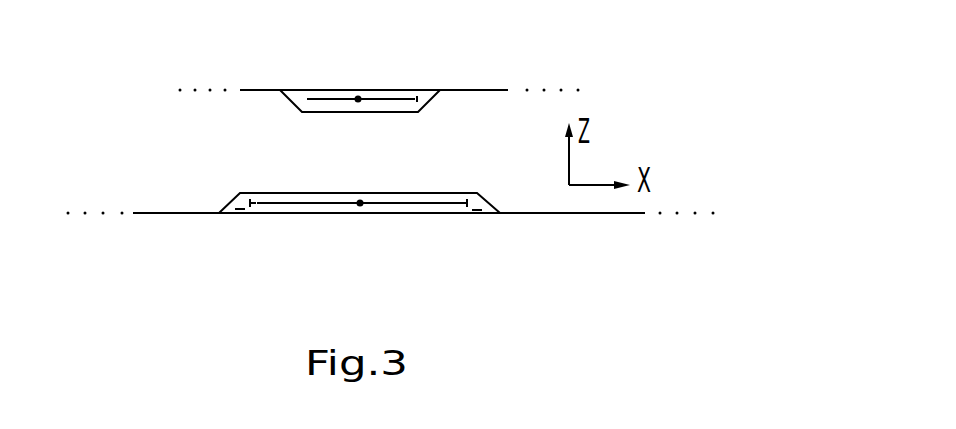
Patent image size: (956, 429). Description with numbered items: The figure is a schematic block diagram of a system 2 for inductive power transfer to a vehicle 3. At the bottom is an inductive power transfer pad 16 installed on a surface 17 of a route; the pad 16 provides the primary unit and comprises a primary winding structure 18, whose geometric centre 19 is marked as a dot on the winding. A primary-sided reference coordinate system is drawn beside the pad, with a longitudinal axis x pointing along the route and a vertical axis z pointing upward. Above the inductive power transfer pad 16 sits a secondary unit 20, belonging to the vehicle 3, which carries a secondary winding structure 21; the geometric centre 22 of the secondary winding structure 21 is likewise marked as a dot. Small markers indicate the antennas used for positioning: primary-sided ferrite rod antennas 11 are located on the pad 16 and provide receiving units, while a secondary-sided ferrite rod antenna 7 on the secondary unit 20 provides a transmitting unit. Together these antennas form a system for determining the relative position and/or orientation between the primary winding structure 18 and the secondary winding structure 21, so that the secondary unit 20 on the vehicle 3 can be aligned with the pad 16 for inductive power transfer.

The system for inductive power transfer 2 is at (196, 252).
The vehicle 3 is at (478, 90).
The secondary-sided ferrite rod antenna 7 is at (418, 99).
The primary-sided ferrite rod antennas 11 is at (252, 201).
The inductive power transfer pad 16 is at (240, 193).
The surface of a route 17 is at (148, 213).
The primary winding structure 18 is at (412, 202).
The geometric centre of the primary winding structure 19 is at (360, 201).
The secondary unit 20 is at (287, 98).
The secondary winding structure 21 is at (392, 98).
The geometric centre of the secondary winding structure 22 is at (358, 97).